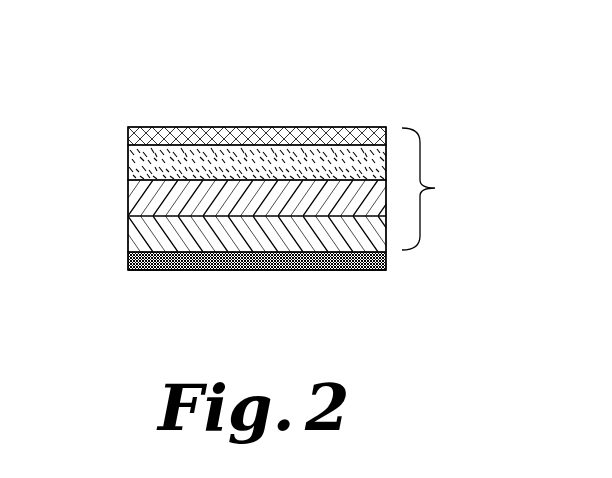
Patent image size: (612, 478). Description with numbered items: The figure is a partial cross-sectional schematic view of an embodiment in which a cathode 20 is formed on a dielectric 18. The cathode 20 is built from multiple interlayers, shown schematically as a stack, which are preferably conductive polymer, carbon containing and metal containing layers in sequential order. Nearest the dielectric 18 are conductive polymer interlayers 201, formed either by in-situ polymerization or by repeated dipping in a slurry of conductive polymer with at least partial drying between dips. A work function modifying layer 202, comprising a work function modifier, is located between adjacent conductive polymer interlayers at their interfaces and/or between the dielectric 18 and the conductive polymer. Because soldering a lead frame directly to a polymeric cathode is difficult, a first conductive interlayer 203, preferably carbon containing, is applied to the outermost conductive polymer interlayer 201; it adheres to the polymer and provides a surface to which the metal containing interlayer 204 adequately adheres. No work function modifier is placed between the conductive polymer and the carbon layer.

The dielectric 18 is at (140, 268).
The cathode 20 is at (314, 198).
The conductive polymer interlayer 201 is at (245, 217).
The work function modifying layer 202 is at (317, 182).
The first conductive interlayer 203 is at (235, 168).
The metal containing interlayer 204 is at (152, 135).